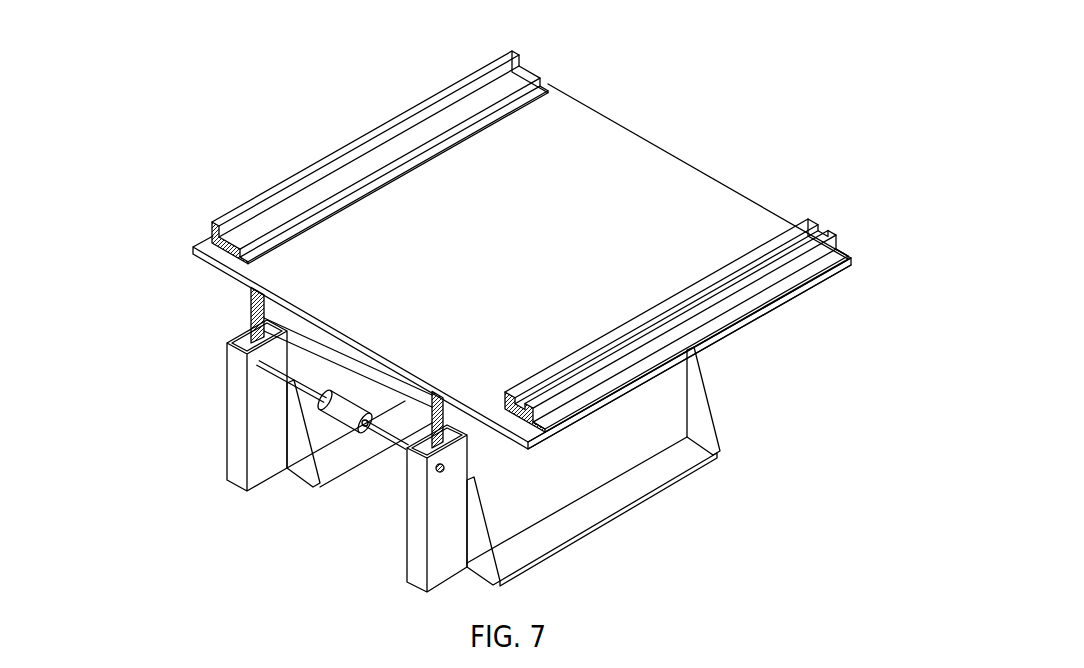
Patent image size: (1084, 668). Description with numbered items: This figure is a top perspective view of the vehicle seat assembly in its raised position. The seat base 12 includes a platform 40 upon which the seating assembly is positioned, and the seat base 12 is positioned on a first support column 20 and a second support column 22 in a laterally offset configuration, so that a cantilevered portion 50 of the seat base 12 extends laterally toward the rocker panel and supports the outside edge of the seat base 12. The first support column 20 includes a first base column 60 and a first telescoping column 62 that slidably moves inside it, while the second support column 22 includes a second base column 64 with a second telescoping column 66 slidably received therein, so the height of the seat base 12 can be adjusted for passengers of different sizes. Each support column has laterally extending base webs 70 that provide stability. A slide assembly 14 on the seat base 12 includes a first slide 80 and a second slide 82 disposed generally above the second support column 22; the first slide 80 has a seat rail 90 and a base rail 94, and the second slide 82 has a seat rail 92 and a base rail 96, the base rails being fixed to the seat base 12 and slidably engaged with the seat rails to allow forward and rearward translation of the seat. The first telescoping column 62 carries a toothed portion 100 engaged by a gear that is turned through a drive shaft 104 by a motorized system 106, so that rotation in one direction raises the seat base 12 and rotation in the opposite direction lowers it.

The seat base 12 is at (236, 124).
The slide assembly 14 is at (153, 240).
The first support column 20 is at (535, 520).
The second support column 22 is at (303, 418).
The platform 40 is at (624, 150).
The cantilevered portion 50 is at (840, 272).
The first base column 60 is at (420, 571).
The first telescoping column 62 is at (408, 388).
The second base column 64 is at (240, 460).
The second telescoping column 66 is at (241, 283).
The base webs 70 is at (303, 470).
The first slide 80 is at (848, 207).
The second slide 82 is at (405, 153).
The seat rail 90 is at (676, 325).
The seat rail 92 is at (246, 214).
The base rail 94 is at (762, 302).
The base rail 96 is at (206, 238).
The toothed portion 100 is at (393, 447).
The drive shaft 104 is at (444, 478).
The motorized system 106 is at (330, 393).